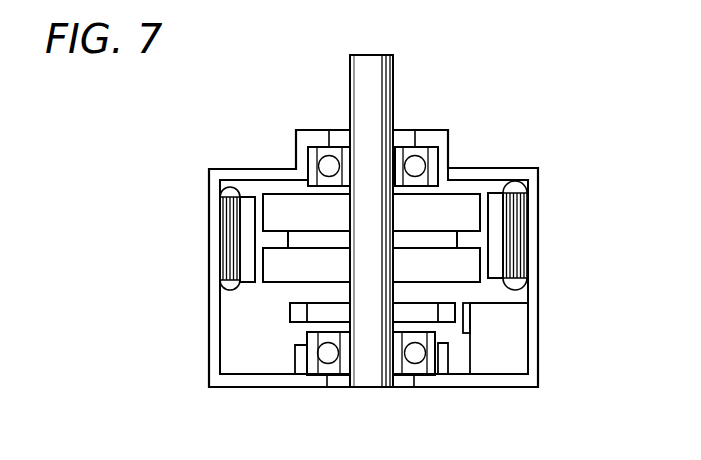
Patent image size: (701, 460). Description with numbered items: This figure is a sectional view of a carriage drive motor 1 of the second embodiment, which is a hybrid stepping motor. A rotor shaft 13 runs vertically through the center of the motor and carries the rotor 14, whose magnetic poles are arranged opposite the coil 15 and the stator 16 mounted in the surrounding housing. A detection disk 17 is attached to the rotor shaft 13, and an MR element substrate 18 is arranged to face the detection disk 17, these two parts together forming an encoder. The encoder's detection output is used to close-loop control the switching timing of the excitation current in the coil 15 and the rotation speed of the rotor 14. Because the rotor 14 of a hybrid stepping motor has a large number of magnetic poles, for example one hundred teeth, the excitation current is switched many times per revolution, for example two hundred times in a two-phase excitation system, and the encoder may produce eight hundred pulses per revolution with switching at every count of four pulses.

The motor assembly 1 is at (455, 106).
The rotor shaft 13 is at (393, 68).
The rotor 14 is at (460, 208).
The coil 15 is at (522, 235).
The stator 16 is at (493, 196).
The detection disk 17 is at (445, 313).
The MR element substrate 18 is at (467, 322).